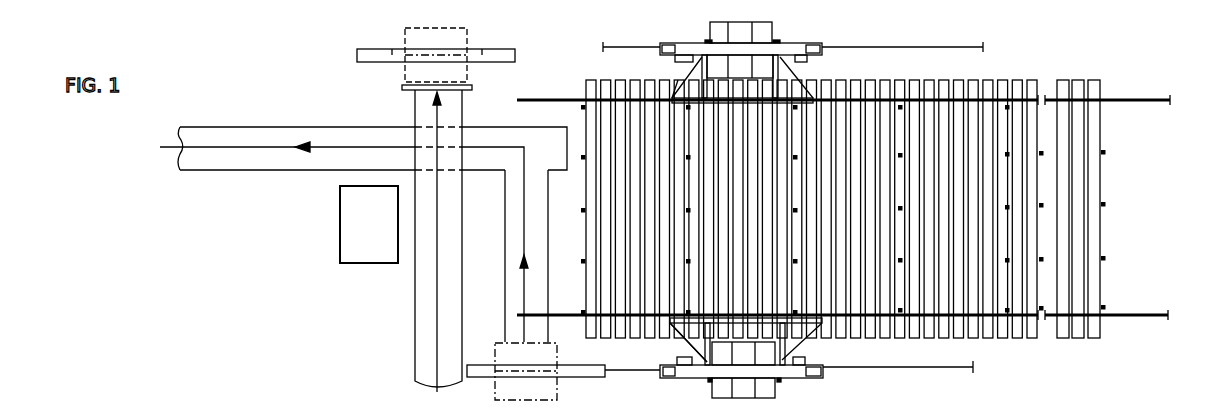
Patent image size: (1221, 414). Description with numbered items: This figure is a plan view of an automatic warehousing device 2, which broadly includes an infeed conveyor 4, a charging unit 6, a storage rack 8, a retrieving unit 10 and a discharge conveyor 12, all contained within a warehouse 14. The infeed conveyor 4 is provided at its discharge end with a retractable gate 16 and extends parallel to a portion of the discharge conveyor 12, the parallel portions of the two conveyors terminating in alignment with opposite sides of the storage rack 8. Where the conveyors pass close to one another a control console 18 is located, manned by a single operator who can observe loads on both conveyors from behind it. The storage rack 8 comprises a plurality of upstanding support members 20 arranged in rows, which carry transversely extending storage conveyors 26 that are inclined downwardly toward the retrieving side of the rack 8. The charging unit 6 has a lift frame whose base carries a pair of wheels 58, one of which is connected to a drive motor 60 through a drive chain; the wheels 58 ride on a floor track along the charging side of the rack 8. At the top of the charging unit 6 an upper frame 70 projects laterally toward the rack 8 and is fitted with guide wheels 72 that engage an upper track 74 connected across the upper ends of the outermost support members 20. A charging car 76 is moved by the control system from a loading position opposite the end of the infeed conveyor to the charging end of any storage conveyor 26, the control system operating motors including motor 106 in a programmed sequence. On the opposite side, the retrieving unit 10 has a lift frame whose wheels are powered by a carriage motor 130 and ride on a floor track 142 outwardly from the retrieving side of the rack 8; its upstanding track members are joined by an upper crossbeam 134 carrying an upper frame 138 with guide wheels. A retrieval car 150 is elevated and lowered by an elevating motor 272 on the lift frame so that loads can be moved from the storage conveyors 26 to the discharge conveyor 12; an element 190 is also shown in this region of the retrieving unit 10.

The automatic warehousing device 2 is at (262, 290).
The infeed conveyor 4 is at (415, 327).
The charging unit 6 is at (757, 45).
The storage rack 8 is at (1103, 176).
The retrieving unit 10 is at (818, 373).
The discharge conveyor 12 is at (238, 172).
The warehouse 14 is at (325, 322).
The retractable gate 16 is at (402, 87).
The control console 18 is at (378, 234).
The upstanding support members 20 is at (582, 262).
The storage conveyors 26 is at (586, 186).
The wheels 58 is at (665, 47).
The drive motor 60 is at (808, 60).
The upper frame 70 is at (773, 79).
The guide wheels 72 is at (672, 96).
The upper track 74 is at (1146, 98).
The charging car 76 is at (714, 31).
The motor 106 is at (680, 60).
The carriage motor 130 is at (678, 360).
The upper crossbeam 134 is at (746, 396).
The upper frame 138 is at (697, 333).
The floor track 142 is at (935, 370).
The retrieval car 150 is at (720, 385).
The lower bracket 190 is at (808, 322).
The elevating motor 272 is at (805, 357).